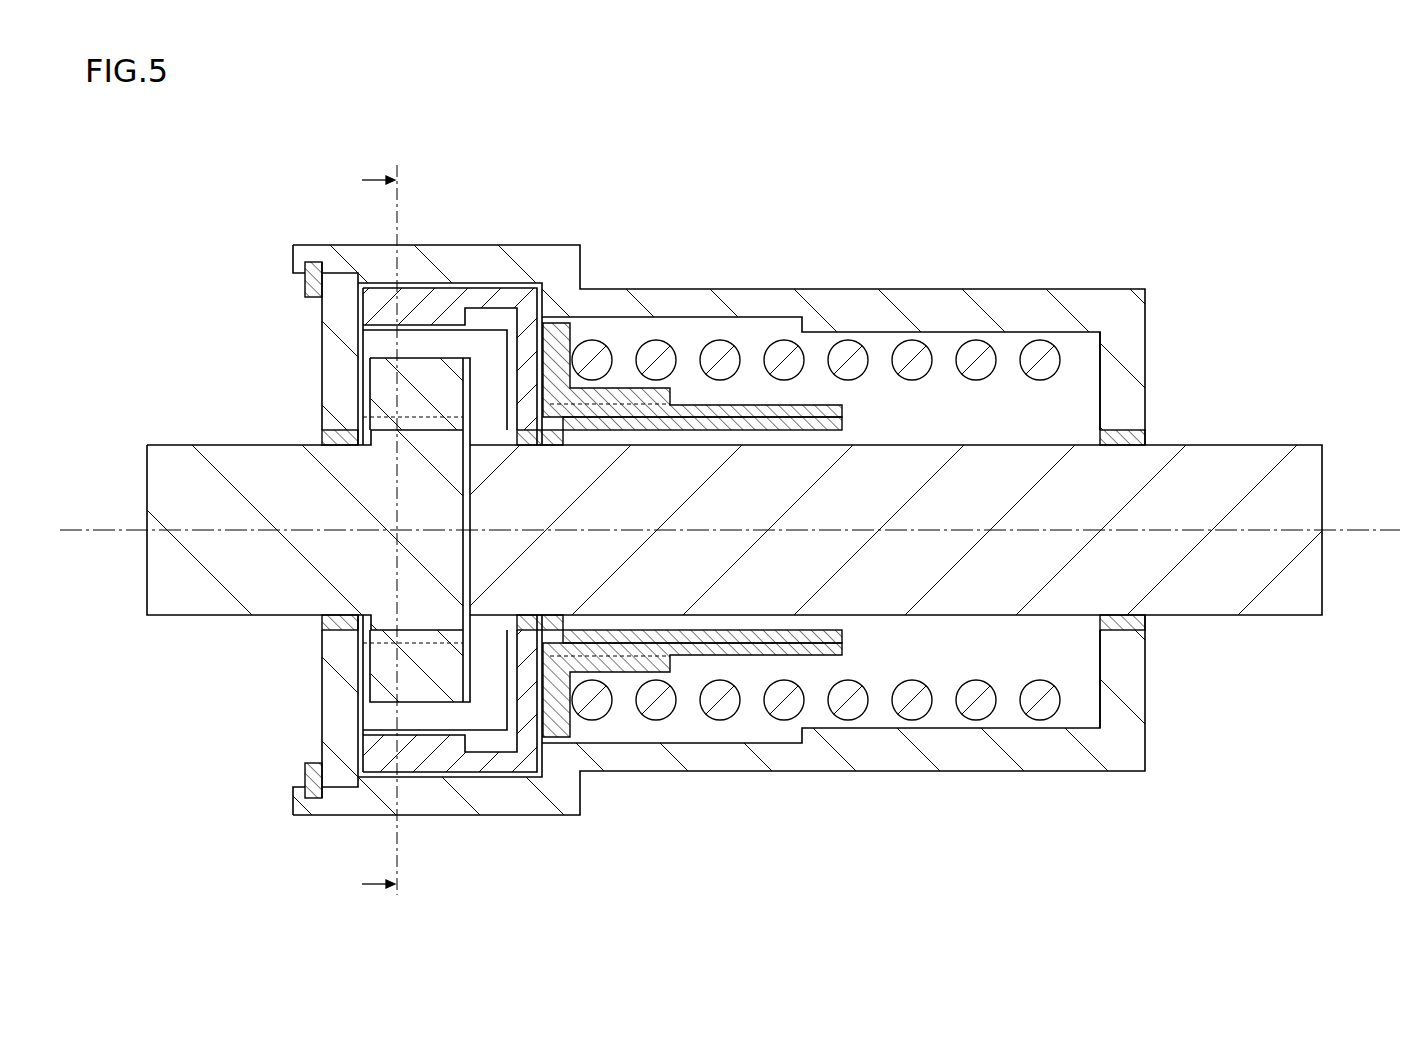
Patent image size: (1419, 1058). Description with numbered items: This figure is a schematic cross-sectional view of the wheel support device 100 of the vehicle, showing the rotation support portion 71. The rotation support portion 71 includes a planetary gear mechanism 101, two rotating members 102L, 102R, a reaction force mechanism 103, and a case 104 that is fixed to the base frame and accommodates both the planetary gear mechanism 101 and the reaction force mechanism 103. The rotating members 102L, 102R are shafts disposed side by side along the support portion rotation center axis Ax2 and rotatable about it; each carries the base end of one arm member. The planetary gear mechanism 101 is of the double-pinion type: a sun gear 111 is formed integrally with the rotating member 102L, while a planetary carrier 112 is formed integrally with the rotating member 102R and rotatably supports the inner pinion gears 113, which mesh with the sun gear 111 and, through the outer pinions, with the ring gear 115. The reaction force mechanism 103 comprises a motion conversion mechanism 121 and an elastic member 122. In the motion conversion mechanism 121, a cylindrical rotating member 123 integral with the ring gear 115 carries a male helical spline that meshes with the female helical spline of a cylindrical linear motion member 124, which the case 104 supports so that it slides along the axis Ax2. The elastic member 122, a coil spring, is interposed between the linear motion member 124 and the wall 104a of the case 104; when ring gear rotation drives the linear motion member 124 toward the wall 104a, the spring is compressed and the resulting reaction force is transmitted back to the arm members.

The damper device 100 is at (1230, 118).
The rotation support portion 71 is at (709, 520).
The case 104 is at (1095, 284).
The wall 104a is at (1125, 408).
The planetary gear mechanism 101 is at (498, 470).
The ring gear 115 is at (455, 297).
The sun gear 111 is at (441, 440).
The planetary carrier 112 is at (488, 385).
The inner pinion gears 113 is at (383, 396).
The motion conversion mechanism 121 is at (692, 482).
The linear motion member 124 is at (618, 387).
The rotating member 123 is at (747, 414).
The reaction force mechanism 103 is at (816, 474).
The elastic member 122 is at (839, 330).
The rotating member 102L is at (168, 445).
The rotating member 102R is at (1257, 445).
The support portion rotation center axis Ax2 is at (1366, 530).